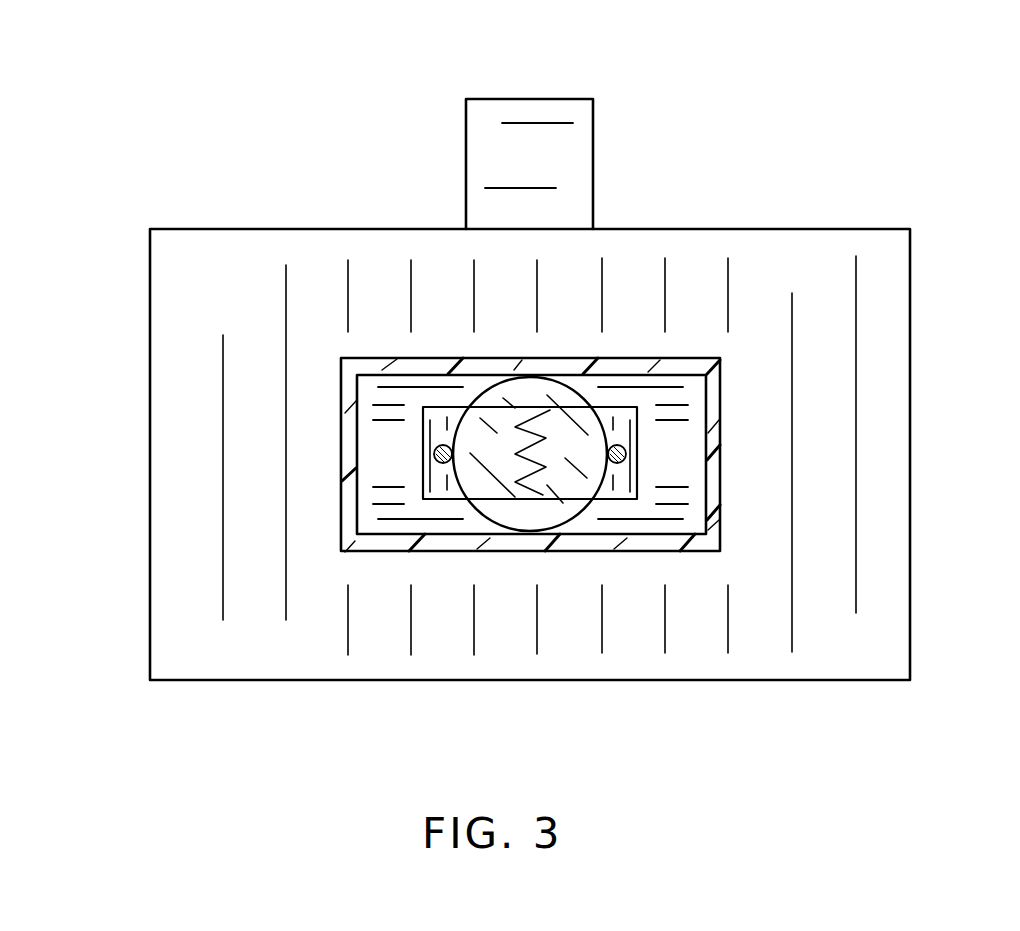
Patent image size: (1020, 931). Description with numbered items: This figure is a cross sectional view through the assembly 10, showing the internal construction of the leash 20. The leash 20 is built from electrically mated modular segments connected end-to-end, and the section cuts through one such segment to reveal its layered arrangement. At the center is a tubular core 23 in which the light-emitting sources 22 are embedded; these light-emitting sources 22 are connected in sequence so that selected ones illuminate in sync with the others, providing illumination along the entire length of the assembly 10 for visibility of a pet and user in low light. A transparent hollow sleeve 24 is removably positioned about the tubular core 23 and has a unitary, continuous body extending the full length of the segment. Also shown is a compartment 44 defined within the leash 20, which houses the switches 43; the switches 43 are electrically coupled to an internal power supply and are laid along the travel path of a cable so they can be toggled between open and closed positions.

The assembly 10 is at (985, 108).
The leash 20 is at (712, 418).
The light-emitting sources 22 is at (532, 515).
The tubular core 23 is at (642, 522).
The transparent hollow sleeve 24 is at (702, 542).
The switches 43 is at (584, 152).
The compartment 44 is at (710, 228).